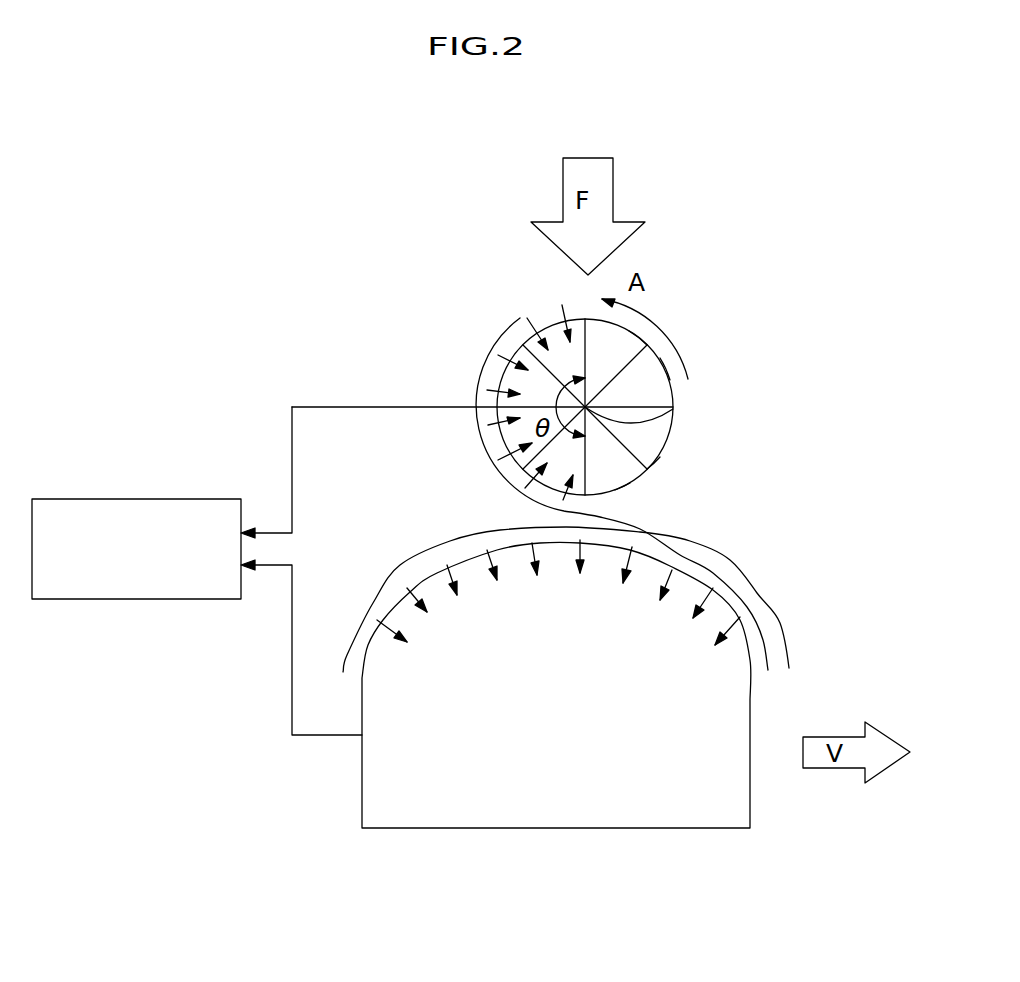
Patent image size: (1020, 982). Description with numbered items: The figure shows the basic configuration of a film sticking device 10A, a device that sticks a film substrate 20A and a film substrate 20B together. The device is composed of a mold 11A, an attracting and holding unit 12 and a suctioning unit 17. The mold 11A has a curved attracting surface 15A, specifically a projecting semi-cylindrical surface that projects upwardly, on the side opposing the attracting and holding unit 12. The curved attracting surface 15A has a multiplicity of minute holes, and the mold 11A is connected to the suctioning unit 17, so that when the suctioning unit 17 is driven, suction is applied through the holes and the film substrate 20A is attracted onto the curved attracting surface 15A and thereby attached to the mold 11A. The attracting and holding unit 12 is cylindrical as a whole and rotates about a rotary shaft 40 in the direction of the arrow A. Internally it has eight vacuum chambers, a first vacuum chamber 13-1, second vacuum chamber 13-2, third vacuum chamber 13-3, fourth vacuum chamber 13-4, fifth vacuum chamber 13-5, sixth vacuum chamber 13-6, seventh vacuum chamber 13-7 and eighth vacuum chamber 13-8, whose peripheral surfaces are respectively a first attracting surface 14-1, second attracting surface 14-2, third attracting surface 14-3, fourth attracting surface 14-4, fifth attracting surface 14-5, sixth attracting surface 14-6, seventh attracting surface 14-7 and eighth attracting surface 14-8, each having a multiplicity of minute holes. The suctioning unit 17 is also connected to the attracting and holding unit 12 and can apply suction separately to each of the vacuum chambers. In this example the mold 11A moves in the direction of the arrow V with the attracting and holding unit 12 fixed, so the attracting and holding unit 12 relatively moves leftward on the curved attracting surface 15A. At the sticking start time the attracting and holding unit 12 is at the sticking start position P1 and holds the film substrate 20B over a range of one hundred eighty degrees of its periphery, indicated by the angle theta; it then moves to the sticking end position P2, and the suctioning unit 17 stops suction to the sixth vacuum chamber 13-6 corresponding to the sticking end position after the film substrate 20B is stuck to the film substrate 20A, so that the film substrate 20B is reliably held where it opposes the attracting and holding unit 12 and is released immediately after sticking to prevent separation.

The film sticking device 10A is at (762, 139).
The mold 11A is at (760, 807).
The attracting and holding unit 12 is at (688, 433).
The first vacuum chamber 13-1 is at (558, 342).
The second vacuum chamber 13-2 is at (603, 350).
The third vacuum chamber 13-3 is at (637, 390).
The fourth vacuum chamber 13-4 is at (648, 433).
The fifth vacuum chamber 13-5 is at (613, 467).
The sixth vacuum chamber 13-6 is at (560, 453).
The seventh vacuum chamber 13-7 is at (490, 445).
The eighth vacuum chamber 13-8 is at (492, 378).
The first attracting surface 14-1 is at (535, 322).
The second attracting surface 14-2 is at (636, 334).
The third attracting surface 14-3 is at (660, 358).
The fourth attracting surface 14-4 is at (660, 457).
The fifth attracting surface 14-5 is at (630, 483).
The sixth attracting surface 14-6 is at (540, 478).
The seventh attracting surface 14-7 is at (500, 458).
The eighth attracting surface 14-8 is at (484, 377).
The curved attracting surface 15A is at (718, 612).
The suctioning unit 17 is at (140, 517).
The film substrate 20A is at (343, 633).
The film substrate 20B is at (781, 618).
The rotary shaft 40 is at (673, 420).
The sticking start position P1 is at (757, 674).
The sticking end position P2 is at (357, 677).